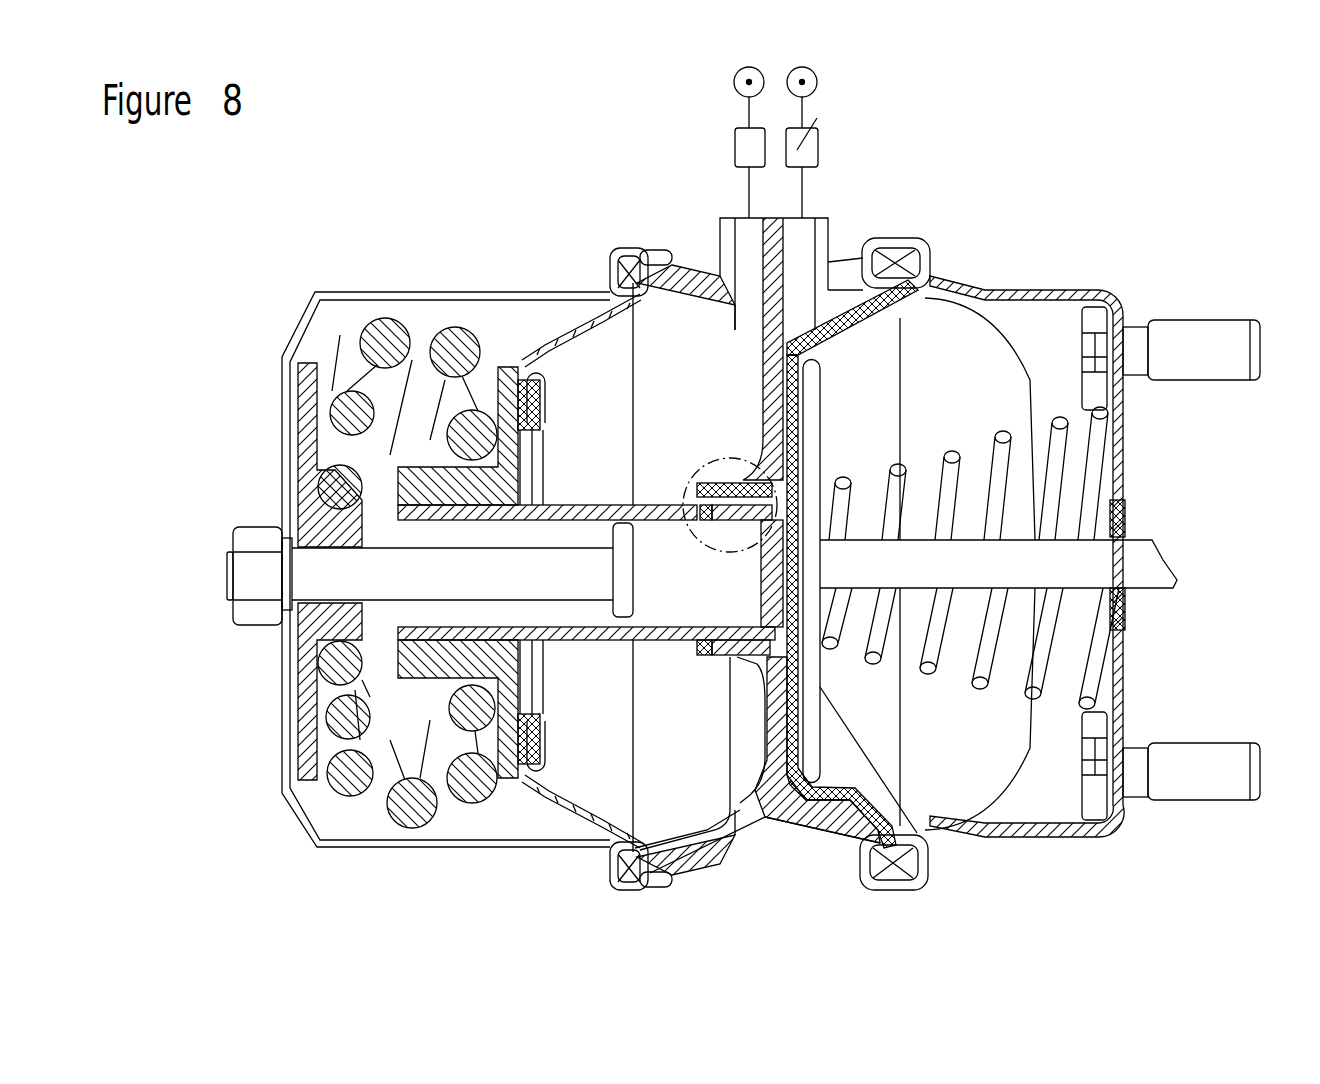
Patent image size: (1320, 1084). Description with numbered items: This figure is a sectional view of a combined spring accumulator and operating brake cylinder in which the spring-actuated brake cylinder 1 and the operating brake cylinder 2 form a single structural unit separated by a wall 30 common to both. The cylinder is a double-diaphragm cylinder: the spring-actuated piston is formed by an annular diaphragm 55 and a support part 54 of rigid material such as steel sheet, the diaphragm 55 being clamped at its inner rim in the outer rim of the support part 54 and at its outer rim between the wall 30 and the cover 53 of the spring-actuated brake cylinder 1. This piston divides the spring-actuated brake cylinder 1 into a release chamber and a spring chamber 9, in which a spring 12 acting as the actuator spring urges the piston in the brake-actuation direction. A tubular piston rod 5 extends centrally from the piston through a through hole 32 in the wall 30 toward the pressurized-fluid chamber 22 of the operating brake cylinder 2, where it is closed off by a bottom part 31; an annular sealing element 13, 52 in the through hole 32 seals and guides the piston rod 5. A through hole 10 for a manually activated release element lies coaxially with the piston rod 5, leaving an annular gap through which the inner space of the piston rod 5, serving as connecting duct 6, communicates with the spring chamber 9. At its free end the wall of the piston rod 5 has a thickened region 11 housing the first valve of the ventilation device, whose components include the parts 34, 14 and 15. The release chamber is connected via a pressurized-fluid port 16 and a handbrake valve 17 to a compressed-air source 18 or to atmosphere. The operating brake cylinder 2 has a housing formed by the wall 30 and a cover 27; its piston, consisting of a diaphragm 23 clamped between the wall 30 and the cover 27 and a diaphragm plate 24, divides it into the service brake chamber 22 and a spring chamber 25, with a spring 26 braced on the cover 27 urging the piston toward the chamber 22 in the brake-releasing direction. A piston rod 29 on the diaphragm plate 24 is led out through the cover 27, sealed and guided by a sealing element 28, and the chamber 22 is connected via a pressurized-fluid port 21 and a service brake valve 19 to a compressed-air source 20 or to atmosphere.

The spring-actuated brake cylinder 1 is at (397, 173).
The operating brake cylinder 2 is at (1072, 212).
The piston rod 5 is at (572, 640).
The connecting duct 6 is at (457, 800).
The spring chamber 9 is at (333, 823).
The through hole 10 is at (282, 765).
The thickened region 11 is at (735, 820).
The spring 12 is at (382, 342).
The annular sealing element 13 is at (633, 399).
The first valve component 14 is at (712, 480).
The first valve component 15 is at (718, 480).
The pressurized-fluid port 16 is at (733, 223).
The handbrake valve 17 is at (743, 150).
The compressed-air source 18 is at (733, 83).
The service brake valve 19 is at (797, 150).
The compressed-air source 20 is at (818, 83).
The pressurized-fluid port 21 is at (770, 483).
The pressurized-fluid chamber 22 is at (880, 240).
The diaphragm 23 is at (863, 357).
The diaphragm plate 24 is at (980, 365).
The spring chamber 25 is at (1030, 290).
The spring 26 is at (1067, 450).
The cover 27 is at (1118, 293).
The sealing element 28 is at (1127, 505).
The piston rod 29 is at (1158, 580).
The wall 30 is at (753, 800).
The bottom part 31 is at (936, 849).
The through hole 32 is at (897, 863).
The first valve component 34 is at (657, 478).
The annular sealing element 52 is at (790, 345).
The cover 53 is at (588, 848).
The support part 54 is at (503, 738).
The annular diaphragm 55 is at (547, 760).